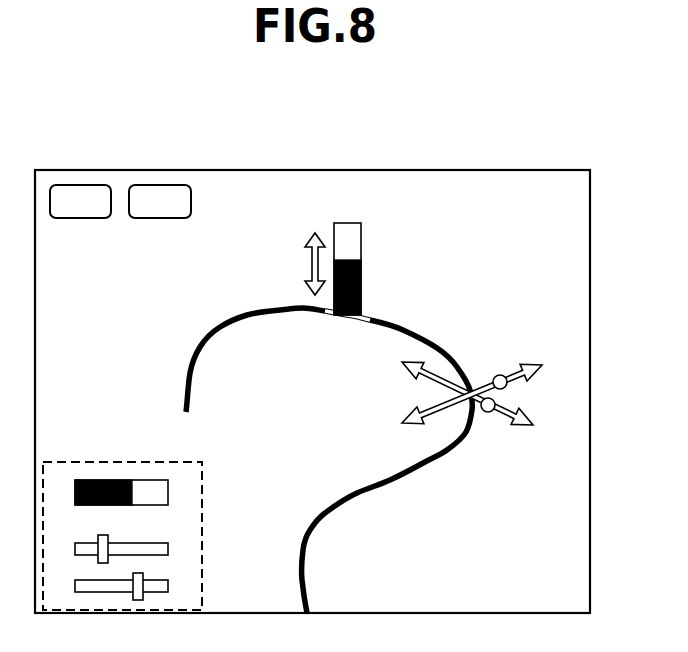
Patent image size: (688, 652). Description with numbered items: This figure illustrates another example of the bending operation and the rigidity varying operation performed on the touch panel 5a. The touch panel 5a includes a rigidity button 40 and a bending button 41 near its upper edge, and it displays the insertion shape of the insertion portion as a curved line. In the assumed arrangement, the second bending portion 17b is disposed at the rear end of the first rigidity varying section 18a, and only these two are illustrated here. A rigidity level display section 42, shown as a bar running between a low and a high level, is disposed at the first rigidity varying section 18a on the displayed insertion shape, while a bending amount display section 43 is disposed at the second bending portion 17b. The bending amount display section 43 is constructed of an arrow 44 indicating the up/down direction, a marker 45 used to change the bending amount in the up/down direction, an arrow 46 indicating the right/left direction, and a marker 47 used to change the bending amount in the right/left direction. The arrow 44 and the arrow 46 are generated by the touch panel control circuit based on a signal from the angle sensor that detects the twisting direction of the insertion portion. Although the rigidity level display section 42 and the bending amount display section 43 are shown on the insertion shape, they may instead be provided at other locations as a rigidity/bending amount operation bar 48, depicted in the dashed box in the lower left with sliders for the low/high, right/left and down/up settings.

The touch panel 5a is at (313, 170).
The rigidity button 40 is at (81, 185).
The bending button 41 is at (162, 185).
The rigidity level display section 42 is at (362, 250).
The second bending portion 17b is at (470, 353).
The first rigidity varying section 18a is at (338, 322).
The bending amount display section 43 is at (486, 430).
The arrow indicating up/down direction 44 is at (506, 377).
The marker to change bending amount in UD direction 45 is at (495, 405).
The arrow indicating right/left direction 46 is at (428, 420).
The marker to change bending amount in RL direction 47 is at (488, 413).
The rigidity/bending amount operation bar 48 is at (124, 460).